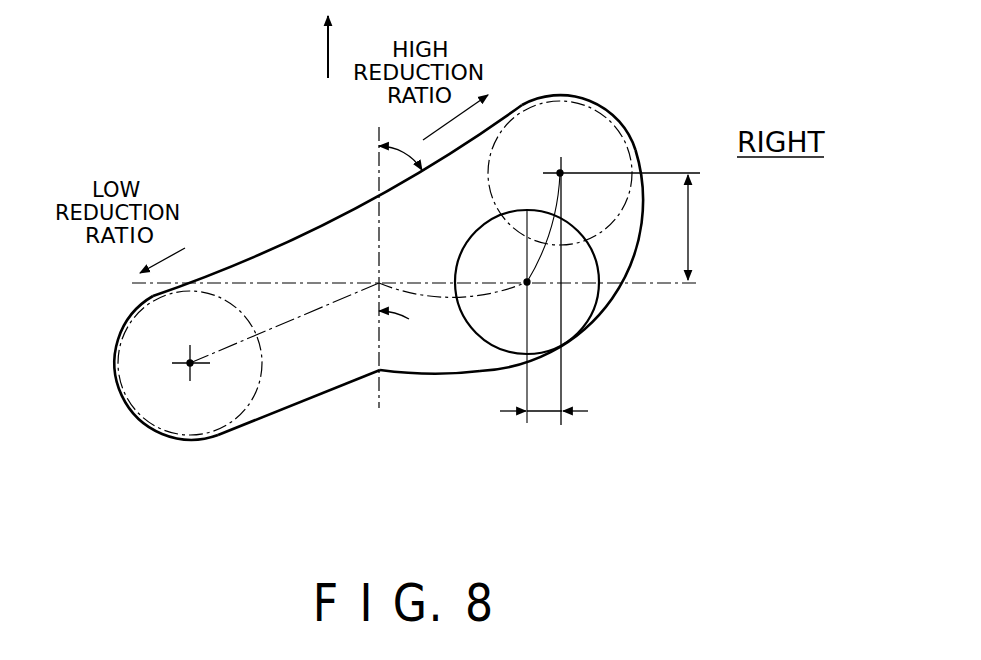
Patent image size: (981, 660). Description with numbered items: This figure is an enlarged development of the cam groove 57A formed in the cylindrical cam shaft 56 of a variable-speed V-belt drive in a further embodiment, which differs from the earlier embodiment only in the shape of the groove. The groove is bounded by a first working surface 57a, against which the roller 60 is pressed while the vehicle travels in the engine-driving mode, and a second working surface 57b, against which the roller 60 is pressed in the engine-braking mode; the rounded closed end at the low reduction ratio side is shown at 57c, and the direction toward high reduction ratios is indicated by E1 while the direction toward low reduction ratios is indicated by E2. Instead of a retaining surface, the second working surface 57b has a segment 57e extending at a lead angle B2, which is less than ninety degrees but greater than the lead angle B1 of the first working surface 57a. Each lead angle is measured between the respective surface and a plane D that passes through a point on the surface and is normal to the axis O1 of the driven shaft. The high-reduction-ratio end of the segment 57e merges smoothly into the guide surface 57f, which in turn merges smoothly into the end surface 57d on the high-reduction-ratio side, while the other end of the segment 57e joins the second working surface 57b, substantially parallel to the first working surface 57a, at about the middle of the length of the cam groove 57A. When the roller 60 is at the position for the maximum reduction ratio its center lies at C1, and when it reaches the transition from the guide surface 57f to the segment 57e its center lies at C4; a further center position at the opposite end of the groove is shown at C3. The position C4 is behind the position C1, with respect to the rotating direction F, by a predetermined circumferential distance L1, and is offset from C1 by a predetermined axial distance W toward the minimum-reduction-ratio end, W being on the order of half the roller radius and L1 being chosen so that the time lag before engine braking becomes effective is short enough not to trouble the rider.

The cylindrical cam shaft 56 is at (285, 215).
The cam groove 57A is at (276, 271).
The first working surface 57a is at (334, 220).
The second working surface 57b is at (337, 390).
The left end of arm 57c is at (127, 407).
The end surface 57d is at (612, 110).
The segment having the large lead angle 57e is at (430, 373).
The guide surface 57f is at (612, 297).
The roller 60 is at (562, 95).
The position of the center of the roller C1 is at (379, 283).
The center C3 is at (190, 363).
The position of the center of the roller C4 is at (527, 282).
The axis of the driven shaft O1 is at (292, 282).
The plane D is at (378, 161).
The rotating direction F is at (315, 47).
The high reduction ratio direction E1 is at (471, 106).
The low reduction ratio direction E2 is at (141, 267).
The lead angle β1 B1 is at (402, 153).
The lead angle β2 B2 is at (440, 368).
The predetermined circumferential distance L1 is at (705, 227).
The predetermined axial distance W is at (544, 428).